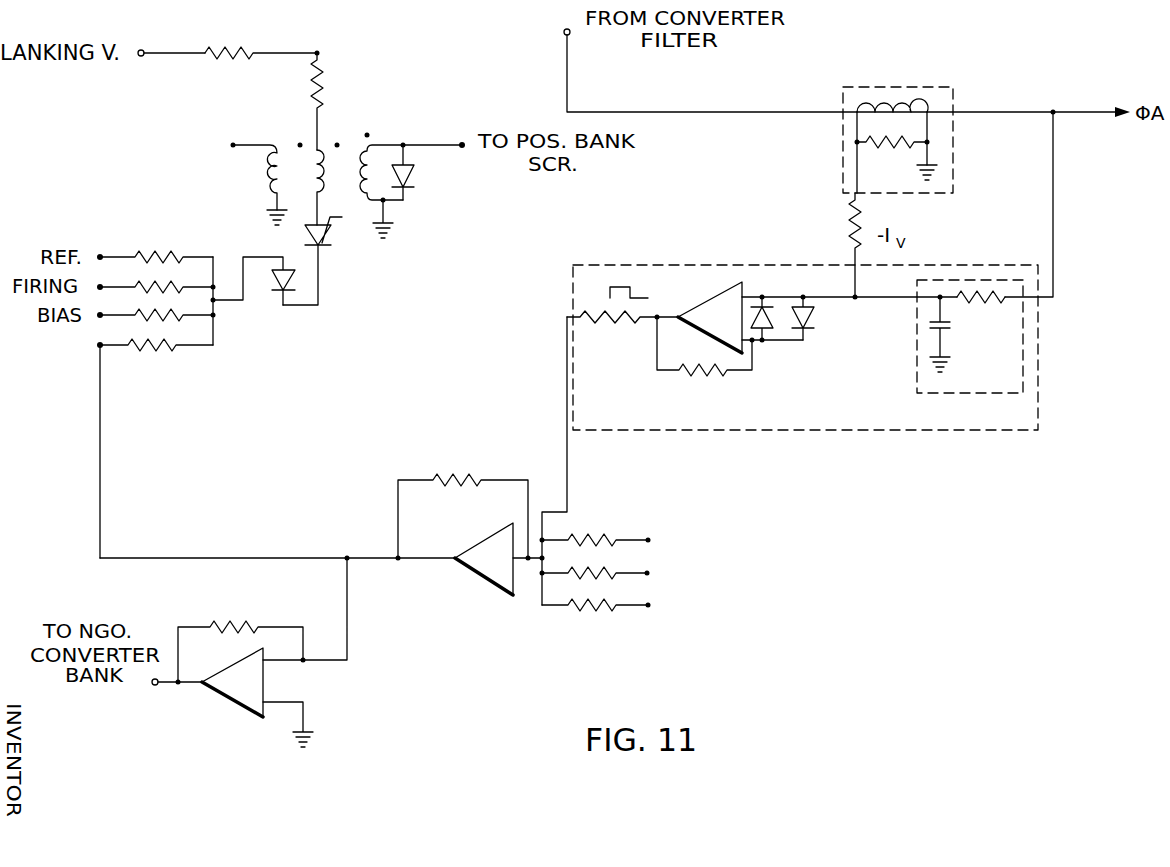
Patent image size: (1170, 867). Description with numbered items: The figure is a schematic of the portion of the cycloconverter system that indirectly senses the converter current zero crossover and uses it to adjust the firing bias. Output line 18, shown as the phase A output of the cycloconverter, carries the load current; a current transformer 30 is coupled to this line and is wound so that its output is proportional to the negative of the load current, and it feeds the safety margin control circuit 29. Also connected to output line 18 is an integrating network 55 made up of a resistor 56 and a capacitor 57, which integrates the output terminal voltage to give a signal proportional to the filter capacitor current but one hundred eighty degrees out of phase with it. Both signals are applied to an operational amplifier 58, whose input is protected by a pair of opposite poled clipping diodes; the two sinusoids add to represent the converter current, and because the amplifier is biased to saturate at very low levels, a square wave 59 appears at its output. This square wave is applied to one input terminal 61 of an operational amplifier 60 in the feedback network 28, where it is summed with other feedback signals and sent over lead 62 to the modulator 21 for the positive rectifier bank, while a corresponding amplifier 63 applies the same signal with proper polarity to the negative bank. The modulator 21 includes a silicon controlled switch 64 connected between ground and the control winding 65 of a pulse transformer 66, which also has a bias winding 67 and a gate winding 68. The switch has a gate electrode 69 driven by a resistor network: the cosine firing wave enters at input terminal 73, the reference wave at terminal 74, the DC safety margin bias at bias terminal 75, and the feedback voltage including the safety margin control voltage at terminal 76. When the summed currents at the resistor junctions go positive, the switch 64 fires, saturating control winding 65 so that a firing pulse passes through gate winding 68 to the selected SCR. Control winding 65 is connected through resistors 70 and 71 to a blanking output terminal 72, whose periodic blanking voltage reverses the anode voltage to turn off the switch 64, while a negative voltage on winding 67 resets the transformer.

The output line 18 is at (725, 112).
The modulator 21 is at (345, 343).
The feedback network 28 is at (470, 683).
The safety margin control circuit 29 is at (852, 430).
The current transformer 30 is at (905, 87).
The integrating network 55 is at (917, 385).
The resistor 56 is at (990, 295).
The capacitor 57 is at (953, 323).
The operational amplifier 58 is at (703, 300).
The square wave 59 is at (634, 287).
The operational amplifier 60 is at (483, 540).
The input terminal 61 is at (650, 541).
The lead 62 is at (233, 556).
The amplifier 63 is at (243, 706).
The silicon controlled switch 64 is at (333, 243).
The control winding 65 is at (328, 162).
The pulse transformer 66 is at (378, 68).
The bias winding 67 is at (262, 170).
The gate winding 68 is at (373, 155).
The gate electrode 69 is at (302, 262).
The resistor 70 is at (313, 68).
The resistor 71 is at (247, 51).
The blanking output terminal 72 is at (140, 49).
The input terminal 73 is at (102, 286).
The terminal 74 is at (101, 255).
The bias terminal 75 is at (101, 314).
The terminal 76 is at (102, 350).